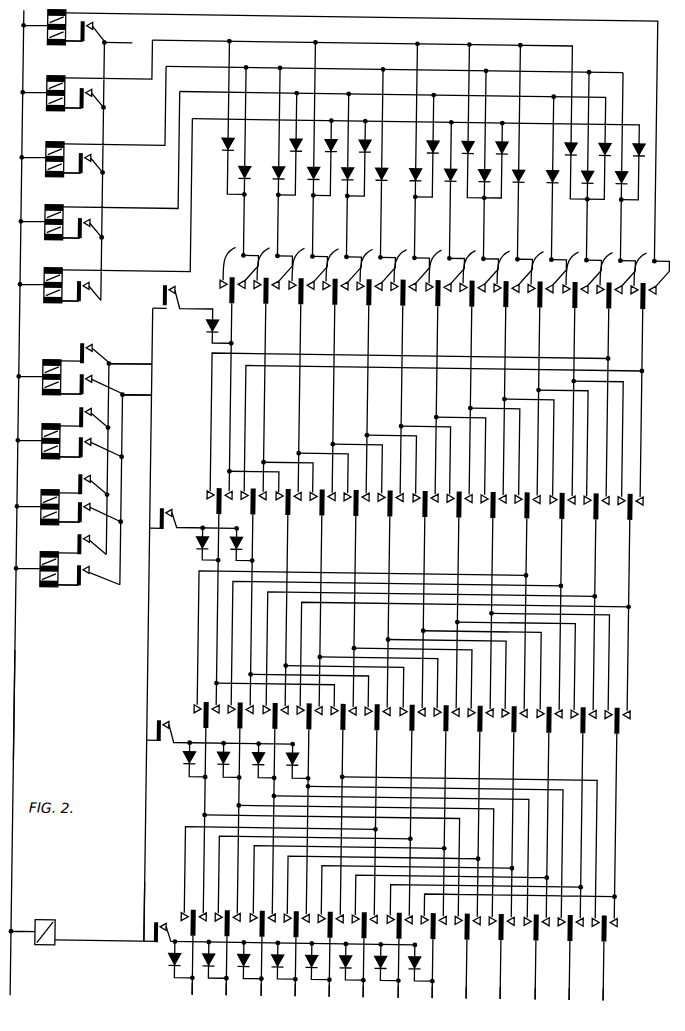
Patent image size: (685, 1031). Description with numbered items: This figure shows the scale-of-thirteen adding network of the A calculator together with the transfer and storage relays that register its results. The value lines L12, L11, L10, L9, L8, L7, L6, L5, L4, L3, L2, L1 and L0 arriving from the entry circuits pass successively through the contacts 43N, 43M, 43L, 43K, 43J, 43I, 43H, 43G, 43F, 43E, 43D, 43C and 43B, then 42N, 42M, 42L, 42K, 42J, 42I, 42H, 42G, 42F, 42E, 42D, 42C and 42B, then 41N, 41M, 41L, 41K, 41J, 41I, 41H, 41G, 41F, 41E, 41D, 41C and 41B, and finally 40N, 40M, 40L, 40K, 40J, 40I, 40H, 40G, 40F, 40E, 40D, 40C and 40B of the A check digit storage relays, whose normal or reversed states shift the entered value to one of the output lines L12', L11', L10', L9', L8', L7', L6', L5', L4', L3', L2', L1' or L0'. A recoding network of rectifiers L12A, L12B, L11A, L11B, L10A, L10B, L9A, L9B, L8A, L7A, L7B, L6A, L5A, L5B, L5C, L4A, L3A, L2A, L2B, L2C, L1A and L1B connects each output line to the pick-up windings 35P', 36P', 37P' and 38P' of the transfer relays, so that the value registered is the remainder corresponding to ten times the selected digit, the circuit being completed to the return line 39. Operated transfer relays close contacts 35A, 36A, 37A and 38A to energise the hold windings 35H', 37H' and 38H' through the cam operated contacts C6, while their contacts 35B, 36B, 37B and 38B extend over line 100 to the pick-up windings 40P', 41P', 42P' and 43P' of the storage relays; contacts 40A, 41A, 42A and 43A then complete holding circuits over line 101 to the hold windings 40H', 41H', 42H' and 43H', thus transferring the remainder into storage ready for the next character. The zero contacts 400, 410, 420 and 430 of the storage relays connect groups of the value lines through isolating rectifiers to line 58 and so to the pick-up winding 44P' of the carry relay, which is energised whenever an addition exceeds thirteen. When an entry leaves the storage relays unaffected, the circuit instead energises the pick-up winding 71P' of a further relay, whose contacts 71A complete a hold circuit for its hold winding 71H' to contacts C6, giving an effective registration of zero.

The pick-up winding 71P' is at (46, 37).
The A contacts 71A is at (94, 25).
The relay hold winding 71H' is at (90, 54).
The cam operated contacts C6 is at (119, 54).
The pick-up winding 35P' is at (65, 85).
The relay contact 35A is at (95, 94).
The relay hold winding 35H' is at (84, 150).
The pick-up winding 36P' is at (47, 148).
The contacts 36A is at (95, 159).
The pick-up winding 37P' is at (46, 212).
The relay contact 37A is at (95, 224).
The relay hold winding 37H' is at (79, 249).
The pick-up winding 38P' is at (43, 277).
The contacts 38A is at (95, 288).
The hold winding 38H' is at (67, 316).
The relay winding 40P' is at (40, 368).
The relay contact 35B is at (97, 347).
The contacts 40A is at (97, 379).
The relay hold winding 40H' is at (50, 407).
The line 100 is at (146, 362).
The line 101 is at (146, 393).
The pick-up winding 41P' is at (68, 429).
The contacts 36B is at (106, 413).
The contacts 41A is at (135, 450).
The relay hold winding 41H' is at (48, 471).
The relay winding 42P' is at (66, 493).
The relay contact 37B is at (110, 484).
The contacts 42A is at (100, 511).
The relay hold winding 42H' is at (47, 536).
The pick-up winding 43P' is at (64, 556).
The contacts 38B is at (110, 551).
The contacts 43A is at (97, 585).
The relay hold winding 43H' is at (46, 598).
The return line 39 is at (27, 712).
The line 58 is at (157, 904).
The pick-up winding 44P' is at (50, 923).
The zero contacts 400 is at (180, 298).
The zero contacts 410 is at (174, 528).
The zero contacts 420 is at (177, 723).
The zero contacts 430 is at (178, 926).
The rectifier L12B is at (227, 136).
The rectifier L11A is at (293, 143).
The rectifier L10A is at (333, 134).
The rectifier L9A is at (367, 134).
The rectifier L7A is at (428, 141).
The diode L5C is at (469, 134).
The rectifier L5A is at (504, 134).
The rectifier L2C is at (572, 134).
The rectifier L2A is at (606, 134).
The rectifier L1A is at (643, 150).
The rectifier L12A is at (241, 170).
The rectifier L11B is at (281, 177).
The rectifier L10B is at (316, 178).
The rectifier L9B is at (350, 178).
The rectifier L8A is at (384, 178).
The rectifier L7B is at (417, 176).
The rectifier L6A is at (453, 178).
The rectifier L5B is at (487, 178).
The rectifier L4A is at (522, 174).
The rectifier L3A is at (555, 178).
The rectifier L2B is at (590, 178).
The rectifier L1B is at (624, 178).
The output line L12' is at (229, 255).
The output line L11' is at (263, 255).
The output line L10' is at (298, 256).
The output line L9' is at (328, 256).
The output line L8' is at (362, 257).
The output line L7' is at (396, 257).
The output line L6' is at (431, 258).
The output line L5' is at (465, 258).
The output line L4' is at (499, 259).
The output line L3' is at (533, 259).
The output line L2' is at (568, 260).
The output line L1' is at (602, 260).
The input lead L0' is at (636, 261).
The transfer contact 40N is at (243, 298).
The transfer contact 40M is at (271, 300).
The transfer contact 40L is at (310, 299).
The contacts 40K is at (340, 300).
The contacts 40J is at (377, 300).
The transfer contact 40I is at (408, 300).
The transfer contact 40H is at (449, 301).
The transfer contact 40G is at (477, 300).
The transfer contact 40F is at (515, 302).
The transfer contact 40E is at (545, 300).
The contacts 40D is at (586, 303).
The contacts 40C is at (614, 300).
The contacts 40B is at (636, 304).
The contacts 41N is at (230, 509).
The contacts 41M is at (261, 511).
The transfer contact 41L is at (297, 510).
The transfer contact 41K is at (330, 511).
The transfer contact 41J is at (364, 511).
The contacts 41I is at (398, 511).
The contacts 41H is at (436, 512).
The transfer contact 41G is at (467, 511).
The transfer contact 41F is at (502, 513).
The transfer contact 41E is at (535, 511).
The contacts 41D is at (573, 514).
The transfer contact 41C is at (604, 511).
The contacts 41B is at (622, 514).
The transfer contact 42N is at (217, 723).
The contacts 42M is at (251, 723).
The transfer contact 42L is at (284, 724).
The transfer contact 42K is at (319, 724).
The contacts 42J is at (354, 725).
The contacts 42I is at (385, 725).
The contacts 42H is at (422, 737).
The transfer contact 42G is at (457, 726).
The transfer contact 42F is at (491, 725).
The transfer contact 42E is at (524, 727).
The transfer contact 42D is at (560, 725).
The transfer contact 42C is at (593, 728).
The contacts 42B is at (628, 725).
The contacts 43N is at (204, 931).
The contacts 43M is at (238, 931).
The transfer contact 43L is at (271, 932).
The transfer contact 43K is at (306, 932).
The contacts 43J is at (338, 933).
The contacts 43I is at (372, 933).
The transfer contact 43H is at (410, 933).
The transfer contact 43G is at (447, 933).
The transfer contact 43F is at (476, 934).
The contacts 43E is at (515, 933).
The transfer contact 43D is at (547, 935).
The transfer contact 43C is at (580, 936).
The contacts 43B is at (618, 933).
The value line L12 is at (178, 999).
The value line L11 is at (212, 1000).
The value line L10 is at (247, 1000).
The value line L9 is at (283, 1001).
The value line L8 is at (317, 1001).
The value line L7 is at (351, 1002).
The value line L6 is at (386, 1002).
The value line L5 is at (420, 1003).
The value line L4 is at (454, 1003).
The value line L3 is at (488, 1004).
The value line L2 is at (523, 1004).
The value line L1 is at (557, 1005).
The value line L0 is at (591, 1005).